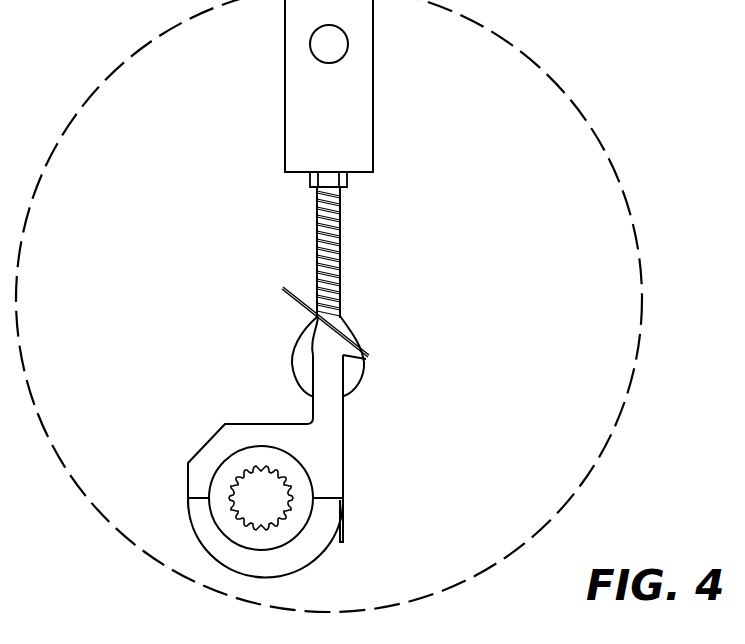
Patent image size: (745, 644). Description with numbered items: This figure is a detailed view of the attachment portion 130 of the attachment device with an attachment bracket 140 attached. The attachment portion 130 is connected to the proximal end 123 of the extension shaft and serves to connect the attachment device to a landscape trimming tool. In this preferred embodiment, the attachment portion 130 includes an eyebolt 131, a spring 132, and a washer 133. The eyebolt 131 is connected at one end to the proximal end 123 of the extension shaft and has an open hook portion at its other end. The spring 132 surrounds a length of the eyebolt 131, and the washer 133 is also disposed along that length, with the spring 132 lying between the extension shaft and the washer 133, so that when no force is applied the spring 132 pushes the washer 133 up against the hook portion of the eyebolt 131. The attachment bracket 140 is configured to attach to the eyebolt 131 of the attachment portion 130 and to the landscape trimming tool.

The proximal end 123 is at (367, 158).
The attachment portion 130 is at (332, 292).
The eyebolt 131 is at (296, 362).
The spring 132 is at (317, 232).
The washer 133 is at (355, 342).
The attachment bracket 140 is at (362, 497).